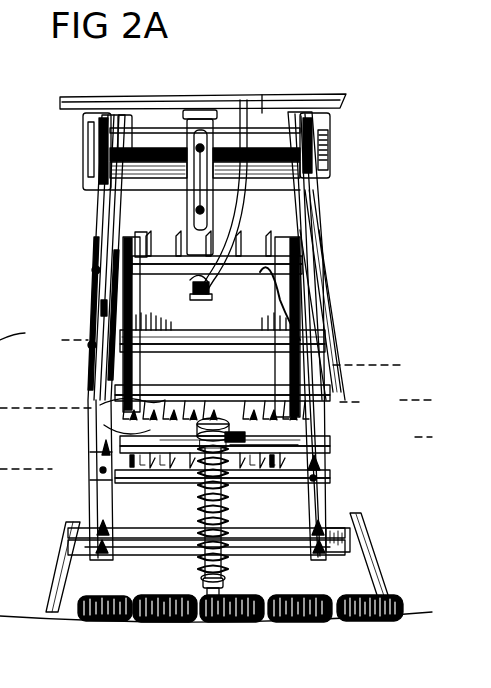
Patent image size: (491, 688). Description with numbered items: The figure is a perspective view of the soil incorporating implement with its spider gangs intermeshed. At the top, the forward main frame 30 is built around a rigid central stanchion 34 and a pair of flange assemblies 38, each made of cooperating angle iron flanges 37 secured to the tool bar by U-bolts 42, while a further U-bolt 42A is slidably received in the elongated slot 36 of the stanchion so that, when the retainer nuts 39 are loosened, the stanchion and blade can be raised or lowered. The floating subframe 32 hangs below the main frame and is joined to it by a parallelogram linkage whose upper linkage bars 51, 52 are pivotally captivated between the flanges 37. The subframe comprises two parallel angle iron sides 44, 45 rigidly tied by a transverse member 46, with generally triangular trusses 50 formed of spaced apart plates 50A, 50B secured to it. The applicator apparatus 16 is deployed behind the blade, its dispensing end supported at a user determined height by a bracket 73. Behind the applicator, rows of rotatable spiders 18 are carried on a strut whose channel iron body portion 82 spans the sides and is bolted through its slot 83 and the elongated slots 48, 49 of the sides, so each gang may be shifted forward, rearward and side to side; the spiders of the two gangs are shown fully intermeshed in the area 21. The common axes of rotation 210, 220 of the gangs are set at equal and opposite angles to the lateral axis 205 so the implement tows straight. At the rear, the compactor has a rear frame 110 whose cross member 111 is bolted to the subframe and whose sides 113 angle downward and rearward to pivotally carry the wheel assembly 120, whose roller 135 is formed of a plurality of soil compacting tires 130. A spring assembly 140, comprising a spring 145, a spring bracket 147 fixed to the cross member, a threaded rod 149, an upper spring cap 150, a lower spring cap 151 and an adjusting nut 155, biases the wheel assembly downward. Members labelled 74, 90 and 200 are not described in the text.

The applicator apparatus 16 is at (180, 302).
The spiders 18 is at (108, 407).
The intermeshing area 21 is at (240, 377).
The forward main frame 30 is at (290, 226).
The floating subframe 32 is at (95, 444).
The central stanchion 34 is at (200, 112).
The elongated slot 36 is at (262, 108).
The angle iron flanges 37 is at (88, 137).
The flange assemblies 38 is at (323, 131).
The retainer nuts 39 is at (190, 135).
The U-bolts 42 is at (120, 120).
The U-bolt 42A is at (243, 100).
The subframe side 44 is at (325, 402).
The subframe side 45 is at (84, 510).
The transverse member 46 is at (155, 256).
The elongated slots 48 is at (320, 464).
The elongated slots 49 is at (272, 302).
The triangular trusses 50 is at (340, 307).
The truss plate 50A is at (322, 292).
The truss plate 50B is at (325, 320).
The upper linkage bar 51 is at (312, 212).
The upper linkage bar 52 is at (96, 230).
The bracket 73 is at (195, 278).
The top beam 74 is at (320, 95).
The channel iron body portion 82 is at (96, 480).
The strut body slot 83 is at (97, 452).
The linkage 90 is at (100, 406).
The rear frame 110 is at (372, 540).
The cross member 111 is at (350, 535).
The rear frame sides 113 is at (374, 578).
The wheel assembly 120 is at (418, 0).
The tires 130 is at (372, 619).
The roller 135 is at (165, 624).
The spring assembly 140 is at (245, 530).
The spring 145 is at (300, 480).
The spring bracket 147 is at (207, 590).
The threaded rod 149 is at (300, 414).
The upper spring cap 150 is at (240, 446).
The lower spring cap 151 is at (200, 578).
The nut 155 is at (230, 430).
The center axis 200 is at (197, 8).
The lateral axis 205 is at (216, 396).
The common axis of rotation 210 is at (201, 341).
The common axis of rotation 220 is at (216, 453).